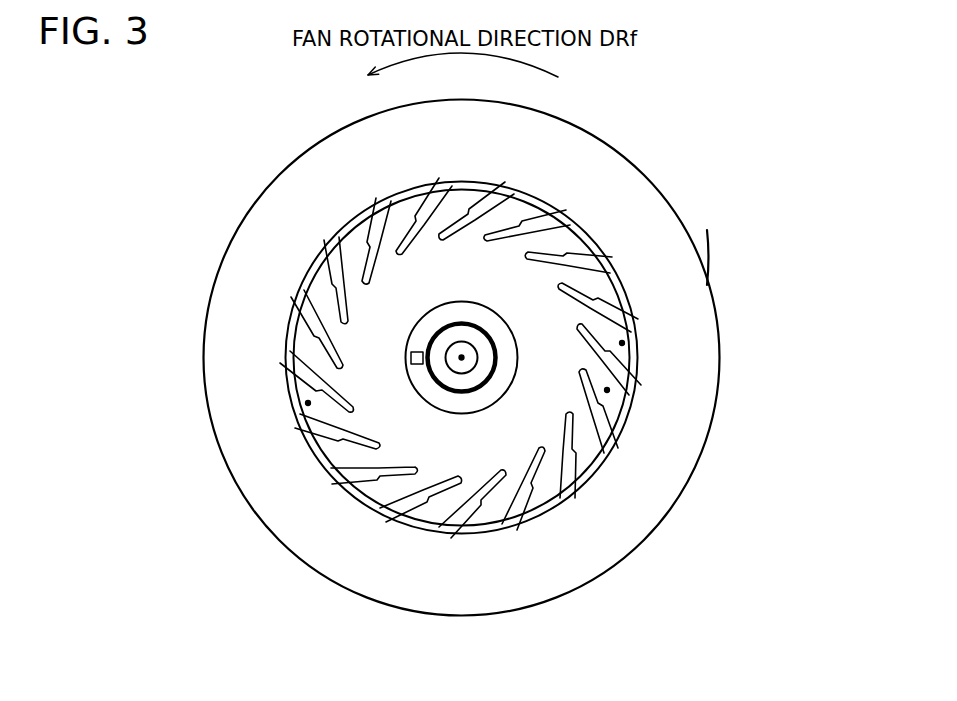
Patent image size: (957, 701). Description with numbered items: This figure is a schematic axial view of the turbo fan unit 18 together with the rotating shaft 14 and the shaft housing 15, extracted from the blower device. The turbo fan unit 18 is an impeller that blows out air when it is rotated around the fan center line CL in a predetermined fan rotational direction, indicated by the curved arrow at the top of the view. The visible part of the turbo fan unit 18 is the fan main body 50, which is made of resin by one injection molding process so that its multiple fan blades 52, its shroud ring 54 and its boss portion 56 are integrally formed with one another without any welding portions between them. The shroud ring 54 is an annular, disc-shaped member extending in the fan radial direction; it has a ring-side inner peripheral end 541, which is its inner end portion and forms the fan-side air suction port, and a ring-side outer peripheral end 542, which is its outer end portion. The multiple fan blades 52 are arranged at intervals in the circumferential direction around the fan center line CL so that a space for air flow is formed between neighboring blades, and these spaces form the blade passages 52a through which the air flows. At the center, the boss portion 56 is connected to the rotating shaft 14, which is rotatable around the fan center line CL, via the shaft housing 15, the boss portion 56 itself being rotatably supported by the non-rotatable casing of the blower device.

The turbo fan unit 18 is at (707, 60).
The fan main body 50 is at (193, 315).
The shroud ring 54 is at (670, 226).
The ring-side outer peripheral end 542 is at (702, 258).
The ring-side inner peripheral end 541 is at (353, 500).
The boss portion 56 is at (367, 312).
The fan blade 52 is at (615, 316).
The blade passage 52a is at (622, 343).
The rotating shaft 14 is at (470, 362).
The shaft housing 15 is at (478, 378).
The fan center line CL is at (461, 358).